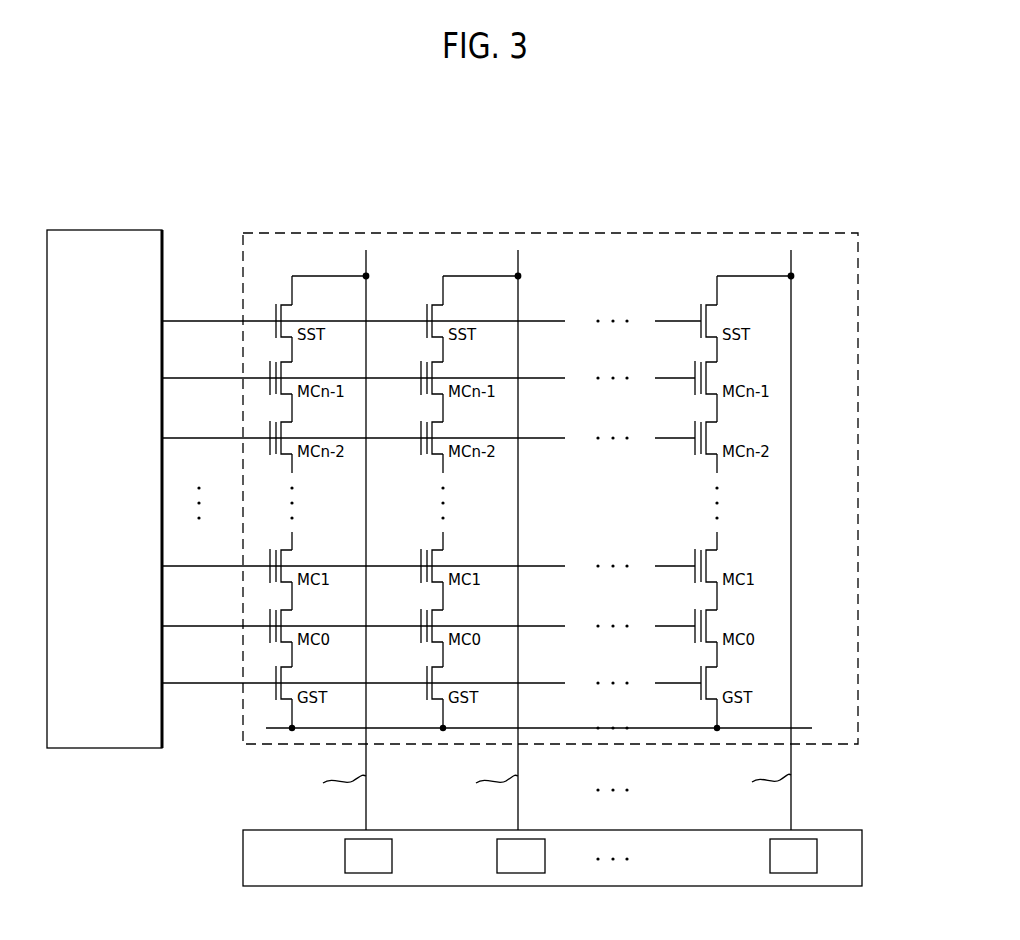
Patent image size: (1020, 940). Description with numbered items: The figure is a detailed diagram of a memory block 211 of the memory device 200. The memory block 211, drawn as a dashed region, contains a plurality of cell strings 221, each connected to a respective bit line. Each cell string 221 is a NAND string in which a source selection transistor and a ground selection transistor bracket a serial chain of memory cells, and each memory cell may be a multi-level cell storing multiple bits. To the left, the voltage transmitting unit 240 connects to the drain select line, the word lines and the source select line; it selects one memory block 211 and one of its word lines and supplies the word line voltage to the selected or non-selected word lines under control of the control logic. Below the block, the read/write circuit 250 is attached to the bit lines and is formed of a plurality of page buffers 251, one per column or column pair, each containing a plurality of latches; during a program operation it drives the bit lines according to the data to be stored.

The memory device 200 is at (843, 133).
The voltage transmitting unit 240 is at (108, 230).
The memory block 211 is at (750, 233).
The cell string 221 is at (281, 283).
The read/write circuit 250 is at (243, 853).
The page buffer 251 is at (345, 853).